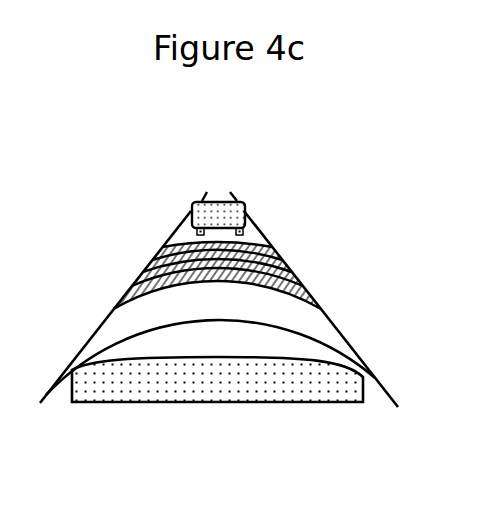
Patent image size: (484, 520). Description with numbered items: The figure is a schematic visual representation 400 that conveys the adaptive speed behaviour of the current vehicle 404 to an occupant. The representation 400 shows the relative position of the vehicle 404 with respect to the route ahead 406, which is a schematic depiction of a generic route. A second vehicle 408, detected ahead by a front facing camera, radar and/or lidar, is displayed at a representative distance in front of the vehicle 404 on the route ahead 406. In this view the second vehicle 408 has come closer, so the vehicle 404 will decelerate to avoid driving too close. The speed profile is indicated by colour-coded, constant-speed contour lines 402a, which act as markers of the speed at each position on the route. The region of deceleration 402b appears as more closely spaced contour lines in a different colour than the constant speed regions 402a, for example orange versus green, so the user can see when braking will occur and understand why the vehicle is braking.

The visual representation 400 is at (306, 172).
The constant-speed contour line 402a is at (327, 347).
The region of deceleration 402b is at (310, 292).
The vehicle 404 is at (250, 385).
The route ahead 406 is at (268, 240).
The second vehicle 408 is at (192, 203).